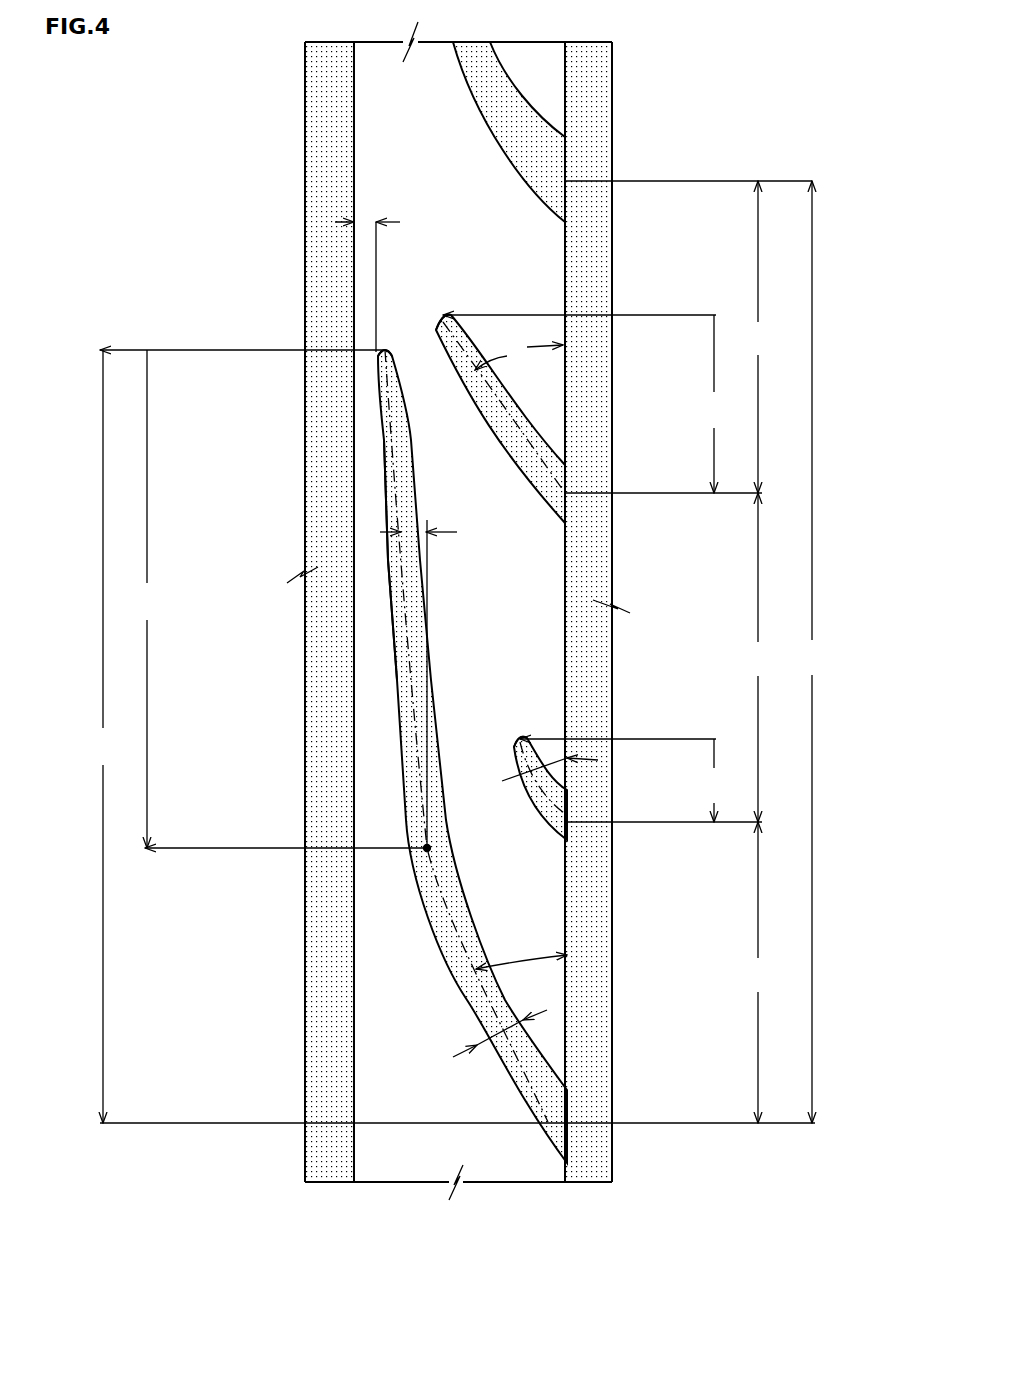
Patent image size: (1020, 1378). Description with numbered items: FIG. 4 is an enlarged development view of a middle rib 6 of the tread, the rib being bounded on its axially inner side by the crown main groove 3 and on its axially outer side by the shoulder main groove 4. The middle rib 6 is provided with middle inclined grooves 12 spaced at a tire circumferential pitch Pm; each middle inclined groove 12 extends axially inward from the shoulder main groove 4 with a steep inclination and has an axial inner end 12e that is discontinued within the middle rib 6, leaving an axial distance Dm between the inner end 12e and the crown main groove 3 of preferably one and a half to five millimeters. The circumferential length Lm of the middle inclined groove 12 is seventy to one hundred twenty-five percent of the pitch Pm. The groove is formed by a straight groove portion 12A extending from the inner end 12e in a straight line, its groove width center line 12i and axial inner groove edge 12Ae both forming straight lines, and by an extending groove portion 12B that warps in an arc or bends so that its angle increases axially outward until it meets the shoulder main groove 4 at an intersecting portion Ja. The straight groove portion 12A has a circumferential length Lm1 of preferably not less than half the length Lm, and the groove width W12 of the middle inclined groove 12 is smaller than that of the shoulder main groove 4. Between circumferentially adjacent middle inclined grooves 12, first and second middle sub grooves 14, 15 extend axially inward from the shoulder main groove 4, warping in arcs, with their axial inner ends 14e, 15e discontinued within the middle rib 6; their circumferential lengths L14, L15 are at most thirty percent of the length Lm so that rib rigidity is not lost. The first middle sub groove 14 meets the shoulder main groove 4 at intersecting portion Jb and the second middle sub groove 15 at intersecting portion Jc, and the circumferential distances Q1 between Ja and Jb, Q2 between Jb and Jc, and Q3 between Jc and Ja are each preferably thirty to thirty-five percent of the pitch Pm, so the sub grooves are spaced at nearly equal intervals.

The crown main groove 3 is at (333, 1159).
The shoulder main groove 4 is at (590, 1160).
The middle rib 6 is at (355, 1185).
The middle inclined groove 12 is at (212, 885).
The straight groove portion 12A is at (410, 776).
The extending groove portion 12B is at (470, 970).
The axial inner end 12e is at (380, 352).
The groove width center line 12i is at (397, 477).
The axial inner groove edge 12Ae is at (394, 631).
The first middle sub groove 14 is at (527, 490).
The axial inner end of first middle sub groove 14e is at (437, 316).
The second middle sub groove 15 is at (540, 810).
The axial inner end of second middle sub groove 15e is at (523, 732).
The intersecting portion Ja is at (580, 192).
The intersecting portion Jb is at (580, 502).
The intersecting portion Jc is at (582, 835).
The groove width W12 is at (503, 1027).
The axial distance Dm is at (367, 272).
The circumferential length Lm is at (235, 736).
The circumferential length of straight groove portion Lm1 is at (273, 599).
The tire circumferential pitch Pm is at (809, 652).
The circumferential distance Q1 is at (757, 337).
The circumferential distance Q2 is at (757, 657).
The circumferential distance Q3 is at (757, 972).
The circumferential length of first middle sub groove L14 is at (587, 404).
The circumferential length of second middle sub groove L15 is at (626, 780).